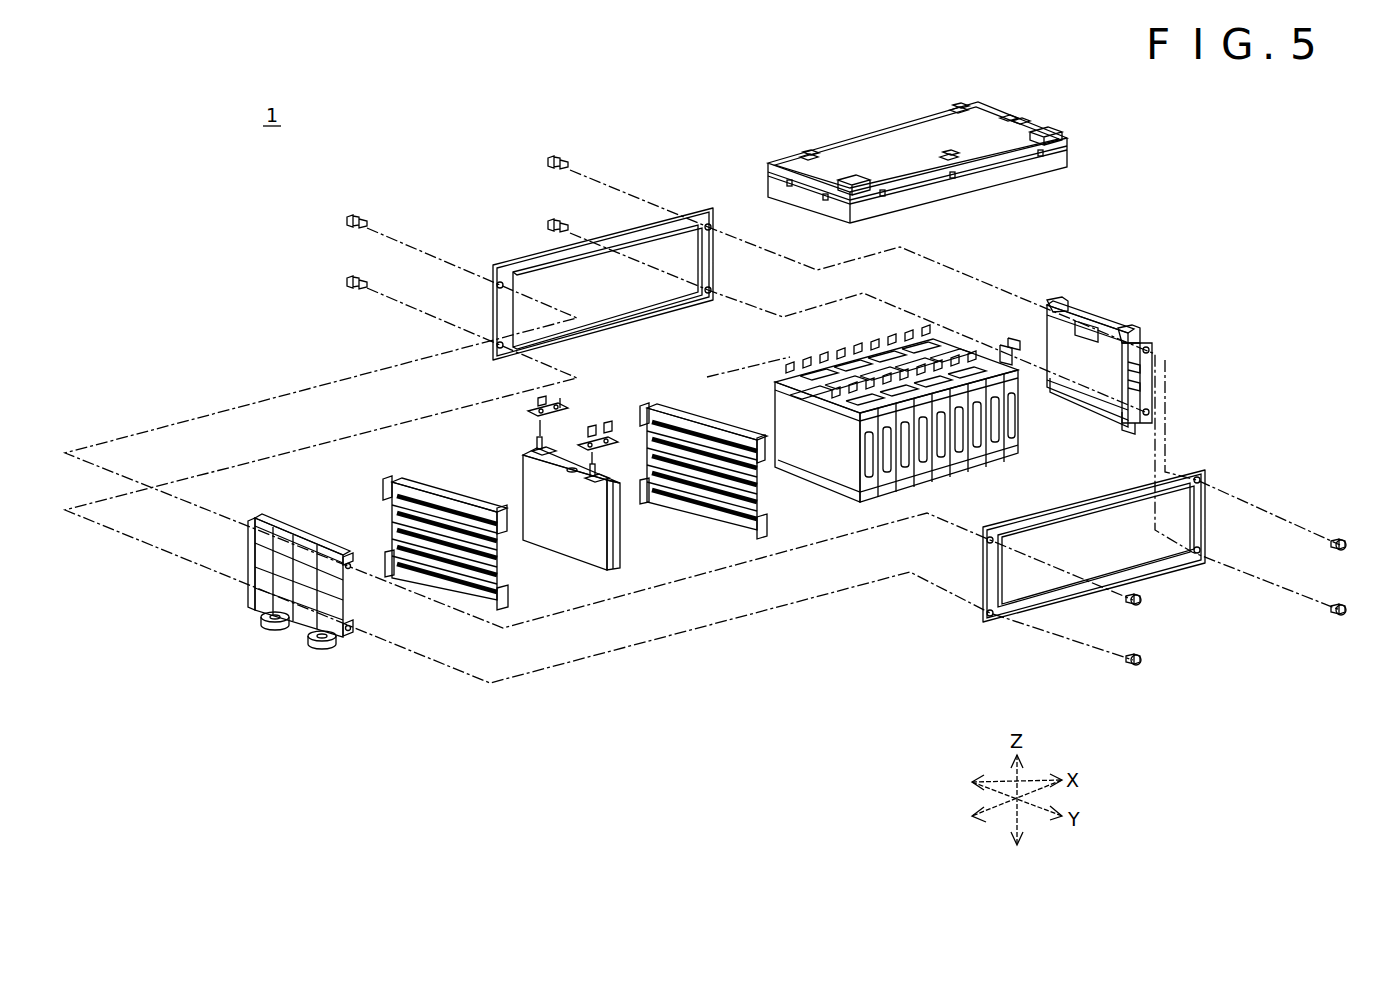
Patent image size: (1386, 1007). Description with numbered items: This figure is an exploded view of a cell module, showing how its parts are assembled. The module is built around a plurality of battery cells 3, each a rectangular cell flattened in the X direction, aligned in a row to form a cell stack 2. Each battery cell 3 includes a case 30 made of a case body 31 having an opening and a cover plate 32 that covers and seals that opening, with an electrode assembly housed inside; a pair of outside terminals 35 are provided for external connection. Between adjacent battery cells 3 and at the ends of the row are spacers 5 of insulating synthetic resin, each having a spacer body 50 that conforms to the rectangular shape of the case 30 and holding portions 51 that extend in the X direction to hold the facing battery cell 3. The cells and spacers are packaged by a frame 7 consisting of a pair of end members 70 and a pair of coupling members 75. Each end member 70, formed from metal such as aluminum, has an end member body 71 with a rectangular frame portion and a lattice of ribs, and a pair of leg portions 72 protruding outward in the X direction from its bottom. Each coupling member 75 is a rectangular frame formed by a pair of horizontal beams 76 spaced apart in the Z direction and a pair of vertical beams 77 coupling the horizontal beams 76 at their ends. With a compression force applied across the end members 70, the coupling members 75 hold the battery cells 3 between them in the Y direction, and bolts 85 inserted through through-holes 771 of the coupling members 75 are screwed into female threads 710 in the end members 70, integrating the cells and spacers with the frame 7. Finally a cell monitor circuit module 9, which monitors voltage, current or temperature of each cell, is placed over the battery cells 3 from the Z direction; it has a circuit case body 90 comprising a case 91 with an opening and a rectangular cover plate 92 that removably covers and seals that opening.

The battery cell stack 2 is at (1012, 455).
The battery cell 3 is at (569, 506).
The spacer 5 is at (567, 560).
The frame 7 is at (691, 484).
The cell monitor circuit module 9 is at (967, 137).
The case 30 is at (478, 462).
The case body 31 is at (542, 494).
The cover plate 32 is at (542, 450).
The outside terminal 35 is at (1010, 344).
The spacer body 50 is at (447, 596).
The holding portion 51 is at (385, 525).
The end member 70 is at (691, 484).
The end member body 71 is at (278, 598).
The leg portion 72 is at (268, 622).
The coupling member 75 is at (853, 426).
The horizontal beam 76 is at (545, 252).
The vertical beam 77 is at (853, 426).
The bolt 85 is at (548, 160).
The circuit case body 90 is at (967, 162).
The case 91 is at (1020, 178).
The cover plate 92 is at (1000, 122).
The female thread 710 is at (345, 635).
The through-hole 771 is at (712, 232).